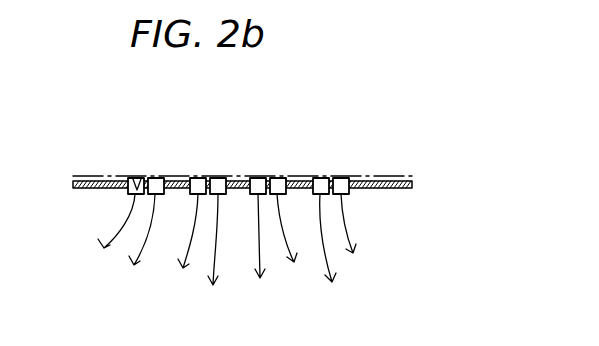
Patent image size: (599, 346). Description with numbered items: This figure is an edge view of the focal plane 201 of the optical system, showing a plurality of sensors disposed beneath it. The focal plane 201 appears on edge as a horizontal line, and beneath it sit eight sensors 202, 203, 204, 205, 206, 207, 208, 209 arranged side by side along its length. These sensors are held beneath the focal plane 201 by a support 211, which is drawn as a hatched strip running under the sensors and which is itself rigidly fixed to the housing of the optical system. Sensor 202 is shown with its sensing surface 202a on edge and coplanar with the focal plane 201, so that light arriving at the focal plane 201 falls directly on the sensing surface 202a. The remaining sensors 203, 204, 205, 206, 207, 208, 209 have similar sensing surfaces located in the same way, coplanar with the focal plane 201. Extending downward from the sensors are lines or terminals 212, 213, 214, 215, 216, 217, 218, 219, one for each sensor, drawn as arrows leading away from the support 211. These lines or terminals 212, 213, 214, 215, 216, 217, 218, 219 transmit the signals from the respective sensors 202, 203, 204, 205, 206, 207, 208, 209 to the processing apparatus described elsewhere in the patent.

The focal plane 201 is at (97, 176).
The sensor 202 is at (141, 177).
The sensing surface 202a is at (133, 177).
The sensor 203 is at (157, 177).
The sensor 204 is at (199, 177).
The sensor 205 is at (215, 177).
The sensor 206 is at (257, 177).
The sensor 207 is at (275, 177).
The sensor 208 is at (320, 177).
The sensor 209 is at (343, 177).
The support 211 is at (88, 192).
The line or terminal 212 is at (118, 234).
The line or terminal 213 is at (140, 247).
The line or terminal 214 is at (188, 253).
The line or terminal 215 is at (212, 268).
The line or terminal 216 is at (258, 255).
The line or terminal 217 is at (290, 240).
The line or terminal 218 is at (330, 268).
The line or terminal 219 is at (348, 233).